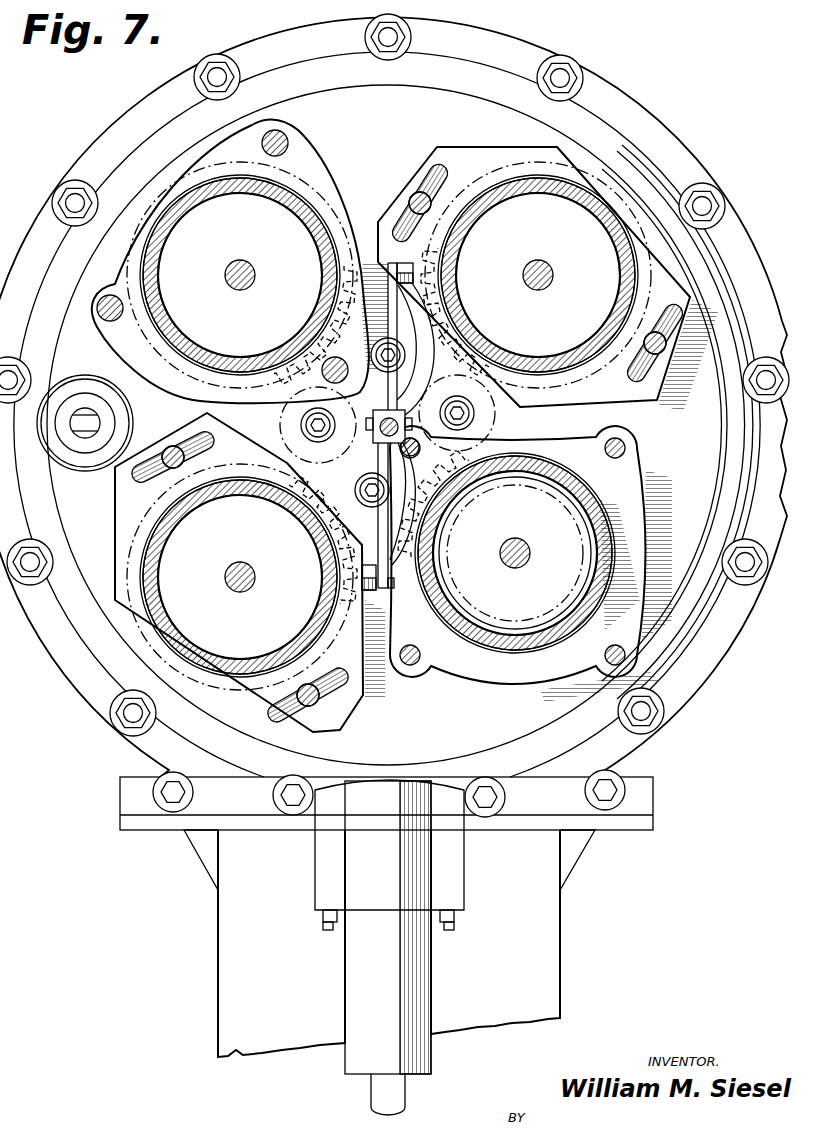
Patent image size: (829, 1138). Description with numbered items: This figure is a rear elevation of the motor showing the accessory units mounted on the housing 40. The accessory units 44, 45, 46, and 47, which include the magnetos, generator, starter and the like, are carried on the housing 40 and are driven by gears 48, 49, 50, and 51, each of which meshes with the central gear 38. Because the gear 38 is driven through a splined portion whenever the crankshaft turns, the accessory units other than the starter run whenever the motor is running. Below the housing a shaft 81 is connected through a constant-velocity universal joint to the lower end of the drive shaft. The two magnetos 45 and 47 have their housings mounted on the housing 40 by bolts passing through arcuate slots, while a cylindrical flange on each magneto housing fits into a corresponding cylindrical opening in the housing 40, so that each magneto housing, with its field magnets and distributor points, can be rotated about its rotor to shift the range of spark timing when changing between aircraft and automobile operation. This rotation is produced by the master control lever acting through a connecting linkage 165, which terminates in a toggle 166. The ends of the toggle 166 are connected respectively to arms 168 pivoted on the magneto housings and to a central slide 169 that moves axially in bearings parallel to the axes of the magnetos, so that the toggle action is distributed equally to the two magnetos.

The housing 40 is at (483, 112).
The gear 38 is at (512, 398).
The accessory unit 44 is at (274, 316).
The magneto 45 is at (570, 318).
The accessory unit 46 is at (535, 586).
The magneto 47 is at (260, 618).
The gear 48 is at (340, 202).
The gear 49 is at (644, 309).
The gear 50 is at (547, 463).
The gear 51 is at (268, 460).
The shaft 81 is at (375, 1097).
The connecting linkage 165 is at (406, 418).
The toggle 166 is at (398, 391).
The arms 168 is at (386, 262).
The central slide 169 is at (373, 418).